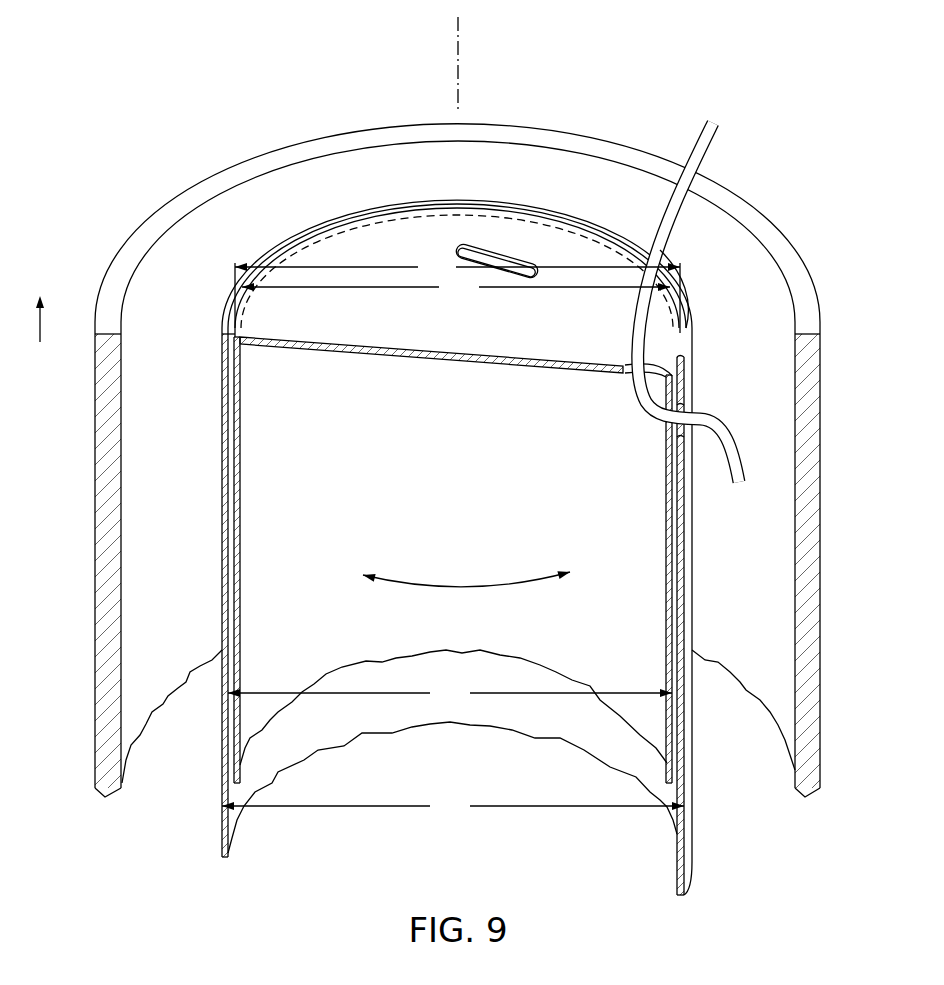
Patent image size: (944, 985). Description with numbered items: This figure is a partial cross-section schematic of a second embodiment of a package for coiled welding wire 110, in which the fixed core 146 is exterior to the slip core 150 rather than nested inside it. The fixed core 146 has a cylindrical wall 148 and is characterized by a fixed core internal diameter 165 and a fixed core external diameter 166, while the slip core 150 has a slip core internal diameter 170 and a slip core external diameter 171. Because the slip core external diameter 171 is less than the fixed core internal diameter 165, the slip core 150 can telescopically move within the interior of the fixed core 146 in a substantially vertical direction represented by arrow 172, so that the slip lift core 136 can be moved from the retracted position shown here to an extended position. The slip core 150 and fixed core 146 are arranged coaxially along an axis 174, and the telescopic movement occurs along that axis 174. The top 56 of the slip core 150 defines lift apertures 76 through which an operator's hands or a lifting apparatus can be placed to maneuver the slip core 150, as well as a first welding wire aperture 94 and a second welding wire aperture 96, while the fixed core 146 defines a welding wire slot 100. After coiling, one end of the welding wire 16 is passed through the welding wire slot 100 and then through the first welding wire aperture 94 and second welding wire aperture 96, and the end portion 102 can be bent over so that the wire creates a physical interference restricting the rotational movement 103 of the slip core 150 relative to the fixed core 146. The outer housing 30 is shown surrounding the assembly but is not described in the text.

The welding wire 16 is at (699, 146).
The outer housing dome 30 is at (739, 199).
The top 56 is at (411, 226).
The lift apertures 76 is at (509, 252).
The first welding wire aperture 94 is at (628, 362).
The second welding wire aperture 96 is at (660, 426).
The welding wire slot 100 is at (688, 393).
The end portion 102 is at (663, 224).
The rotational movement 103 is at (466, 590).
The package for coiled welding wire 110 is at (199, 133).
The slip lift core 136 is at (501, 166).
The fixed core 146 is at (281, 244).
The cylindrical wall 148 is at (221, 455).
The slip core 150 is at (242, 398).
The fixed core internal diameter 165 is at (450, 693).
The fixed core external diameter 166 is at (453, 806).
The slip core internal diameter 170 is at (456, 287).
The slip core external diameter 171 is at (457, 296).
The arrow 172 is at (42, 312).
The axis 174 is at (461, 56).